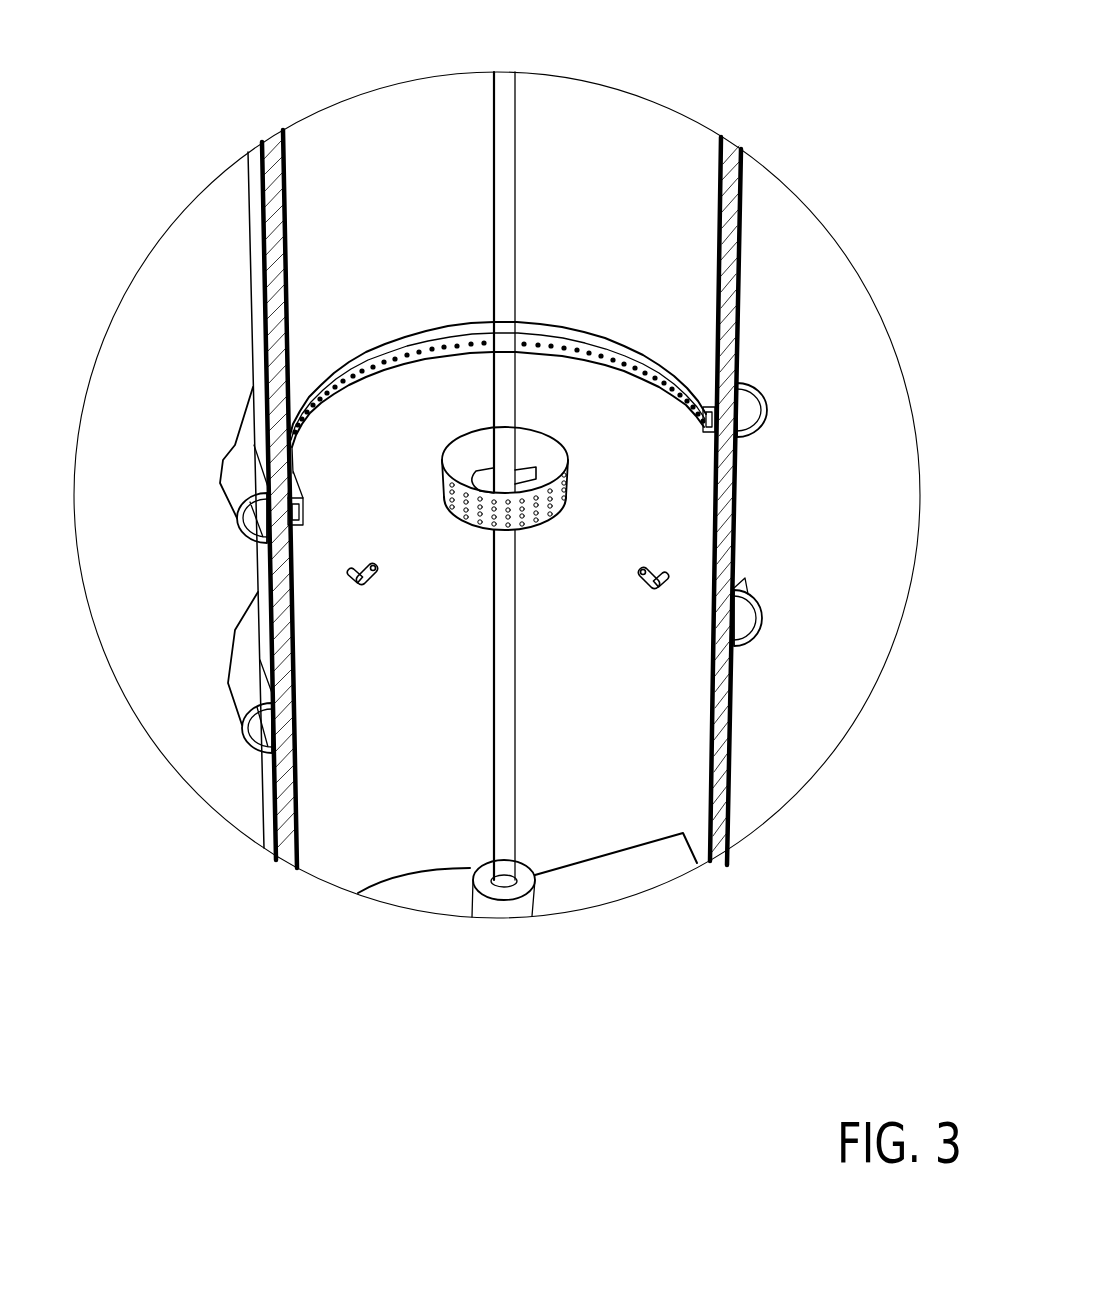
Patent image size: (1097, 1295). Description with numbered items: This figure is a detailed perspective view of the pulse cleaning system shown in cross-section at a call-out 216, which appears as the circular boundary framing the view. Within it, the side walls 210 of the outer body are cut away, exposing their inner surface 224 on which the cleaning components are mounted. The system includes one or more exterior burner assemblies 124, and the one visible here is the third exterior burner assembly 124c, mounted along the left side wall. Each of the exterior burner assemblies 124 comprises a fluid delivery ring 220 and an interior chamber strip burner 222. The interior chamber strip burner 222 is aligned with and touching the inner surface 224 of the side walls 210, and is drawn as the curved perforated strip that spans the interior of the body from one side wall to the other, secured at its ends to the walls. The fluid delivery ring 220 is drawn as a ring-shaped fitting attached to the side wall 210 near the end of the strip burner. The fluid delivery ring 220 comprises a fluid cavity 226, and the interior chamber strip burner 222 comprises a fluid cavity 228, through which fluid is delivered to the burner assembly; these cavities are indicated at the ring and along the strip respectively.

The exterior burner assemblies 124 is at (157, 457).
The third exterior burner assembly 124c is at (240, 460).
The side walls 210 is at (566, 444).
The call-out 216 is at (803, 200).
The fluid delivery ring 220 is at (747, 383).
The interior chamber strip burner 222 is at (714, 433).
The inner surface 224 is at (662, 147).
The fluid cavity 226 is at (750, 412).
The fluid cavity 228 is at (712, 400).